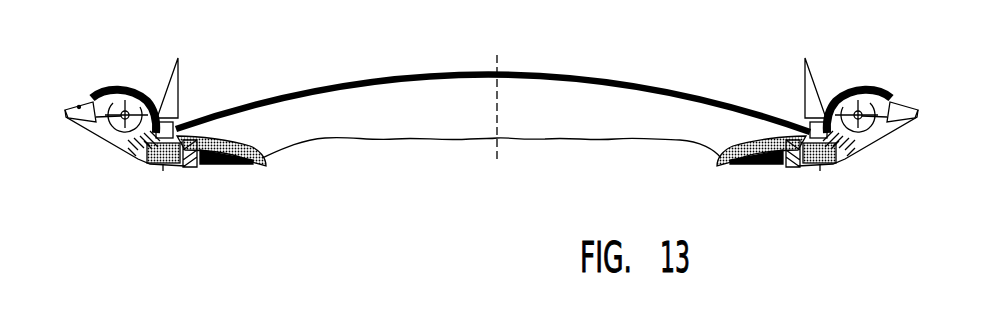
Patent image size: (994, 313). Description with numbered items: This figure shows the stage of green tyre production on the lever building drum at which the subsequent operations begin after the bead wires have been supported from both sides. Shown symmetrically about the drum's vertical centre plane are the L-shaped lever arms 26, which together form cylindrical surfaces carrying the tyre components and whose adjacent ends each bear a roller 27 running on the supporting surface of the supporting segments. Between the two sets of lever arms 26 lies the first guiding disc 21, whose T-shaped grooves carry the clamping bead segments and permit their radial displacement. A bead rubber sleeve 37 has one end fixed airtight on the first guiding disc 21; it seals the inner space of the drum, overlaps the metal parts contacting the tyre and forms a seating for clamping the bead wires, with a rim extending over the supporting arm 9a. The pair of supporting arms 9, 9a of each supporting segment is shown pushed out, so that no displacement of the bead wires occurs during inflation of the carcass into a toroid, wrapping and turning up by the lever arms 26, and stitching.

The lever arm 26 is at (80, 106).
The supporting arm 9a is at (123, 88).
The roller 27 is at (138, 108).
The supporting arm 9 is at (187, 141).
The first guiding disc 21 is at (213, 143).
The bead rubber sleeve 37 is at (232, 141).